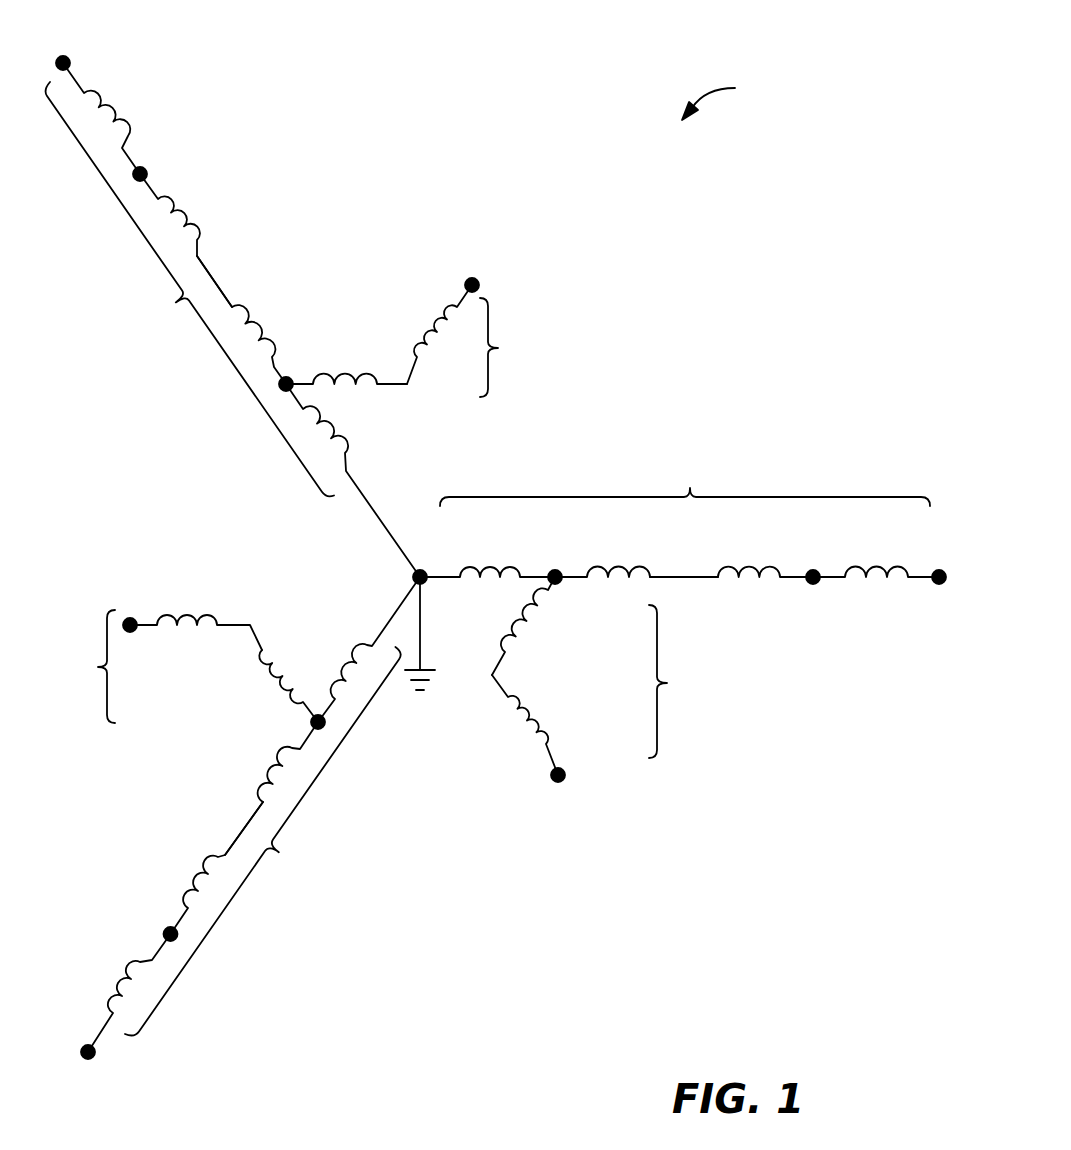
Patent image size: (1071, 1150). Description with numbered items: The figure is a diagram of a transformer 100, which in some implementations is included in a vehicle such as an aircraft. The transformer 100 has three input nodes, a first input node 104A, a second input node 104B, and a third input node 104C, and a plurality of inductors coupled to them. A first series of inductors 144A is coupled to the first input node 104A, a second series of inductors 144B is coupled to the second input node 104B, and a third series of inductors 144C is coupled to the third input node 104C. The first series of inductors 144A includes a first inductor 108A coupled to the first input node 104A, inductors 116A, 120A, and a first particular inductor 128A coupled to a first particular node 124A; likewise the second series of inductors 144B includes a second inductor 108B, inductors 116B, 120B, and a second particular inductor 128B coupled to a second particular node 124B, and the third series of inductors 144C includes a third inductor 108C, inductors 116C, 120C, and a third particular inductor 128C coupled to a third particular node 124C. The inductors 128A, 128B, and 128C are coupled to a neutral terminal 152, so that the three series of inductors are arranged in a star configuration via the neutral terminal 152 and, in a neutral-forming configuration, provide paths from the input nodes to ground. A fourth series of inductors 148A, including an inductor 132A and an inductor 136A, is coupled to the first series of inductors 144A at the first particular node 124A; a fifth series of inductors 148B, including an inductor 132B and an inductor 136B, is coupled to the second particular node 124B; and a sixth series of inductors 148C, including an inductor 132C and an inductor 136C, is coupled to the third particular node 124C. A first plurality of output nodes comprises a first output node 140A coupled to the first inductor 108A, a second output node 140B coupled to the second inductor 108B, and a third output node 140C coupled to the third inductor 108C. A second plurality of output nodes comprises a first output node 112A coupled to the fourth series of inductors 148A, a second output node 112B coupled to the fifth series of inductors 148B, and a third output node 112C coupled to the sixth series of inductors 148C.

The transformer 100 is at (733, 102).
The first input node 104A is at (63, 63).
The second input node 104B is at (937, 582).
The third input node 104C is at (88, 1052).
The first inductor 108A is at (127, 135).
The second inductor 108B is at (850, 566).
The third inductor 108C is at (130, 972).
The first output node 112A is at (472, 285).
The second output node 112B is at (558, 775).
The third output node 112C is at (130, 625).
The inductor 116A is at (197, 240).
The inductor 116B is at (743, 566).
The inductor 116C is at (204, 868).
The inductor 120A is at (240, 303).
The inductor 120B is at (615, 566).
The inductor 120C is at (263, 787).
The first particular node 124A is at (286, 384).
The second particular node 124B is at (556, 580).
The third particular node 124C is at (315, 723).
The first particular inductor 128A is at (345, 452).
The second particular inductor 128B is at (500, 566).
The third particular inductor 128C is at (364, 640).
The inductor 132A is at (321, 373).
The inductor 132B is at (537, 630).
The inductor 132C is at (283, 689).
The inductor 136A is at (456, 305).
The inductor 136B is at (547, 722).
The inductor 136C is at (218, 620).
The first output node 140A is at (140, 174).
The second output node 140B is at (811, 582).
The third output node 140C is at (169, 929).
The first series of inductors 144A is at (190, 289).
The second series of inductors 144B is at (685, 456).
The third series of inductors 144C is at (263, 841).
The fourth series of inductors 148A is at (528, 347).
The fifth series of inductors 148B is at (696, 681).
The sixth series of inductors 148C is at (72, 666).
The neutral terminal 152 is at (412, 571).